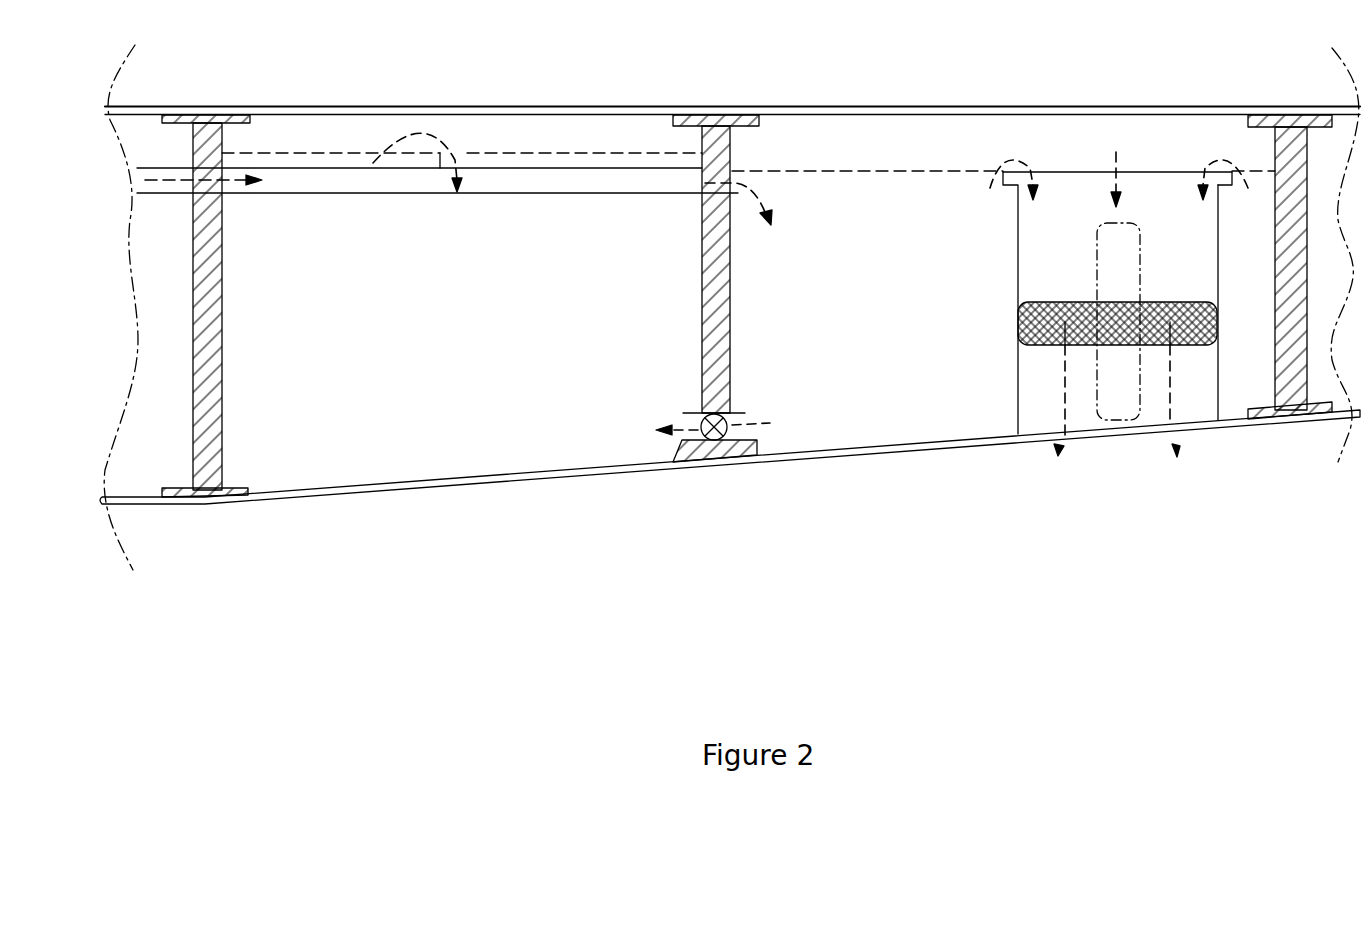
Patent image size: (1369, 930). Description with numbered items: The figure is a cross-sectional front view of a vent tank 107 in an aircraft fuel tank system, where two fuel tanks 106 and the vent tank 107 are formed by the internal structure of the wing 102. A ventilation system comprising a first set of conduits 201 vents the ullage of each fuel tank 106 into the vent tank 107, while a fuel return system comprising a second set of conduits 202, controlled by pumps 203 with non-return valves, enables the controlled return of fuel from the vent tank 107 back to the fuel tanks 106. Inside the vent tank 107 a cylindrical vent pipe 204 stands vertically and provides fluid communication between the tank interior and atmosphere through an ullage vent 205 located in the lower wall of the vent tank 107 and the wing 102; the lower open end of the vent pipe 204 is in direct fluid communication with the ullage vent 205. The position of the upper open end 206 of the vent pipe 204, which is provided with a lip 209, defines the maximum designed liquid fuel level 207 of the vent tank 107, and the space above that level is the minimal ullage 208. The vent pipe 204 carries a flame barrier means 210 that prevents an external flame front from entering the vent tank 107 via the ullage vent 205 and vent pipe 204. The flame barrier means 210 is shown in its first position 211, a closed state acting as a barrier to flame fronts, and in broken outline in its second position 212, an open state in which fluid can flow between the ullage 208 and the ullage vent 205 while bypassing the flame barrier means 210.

The wing 102 is at (448, 485).
The fuel tank 106 is at (138, 127).
The vent tank 107 is at (875, 327).
The first set of conduits 201 is at (267, 170).
The second set of conduits 202 is at (650, 462).
The pump 203 is at (707, 440).
The vent pipe 204 is at (1217, 380).
The ullage vent 205 is at (1077, 440).
The upper open end 206 is at (1077, 167).
The maximum designed liquid fuel level 207 is at (855, 170).
The minimal ullage 208 is at (1038, 125).
The lip 209 is at (1227, 173).
The flame barrier means 210 is at (1122, 345).
The first position 211 is at (1207, 345).
The second position 212 is at (1097, 262).